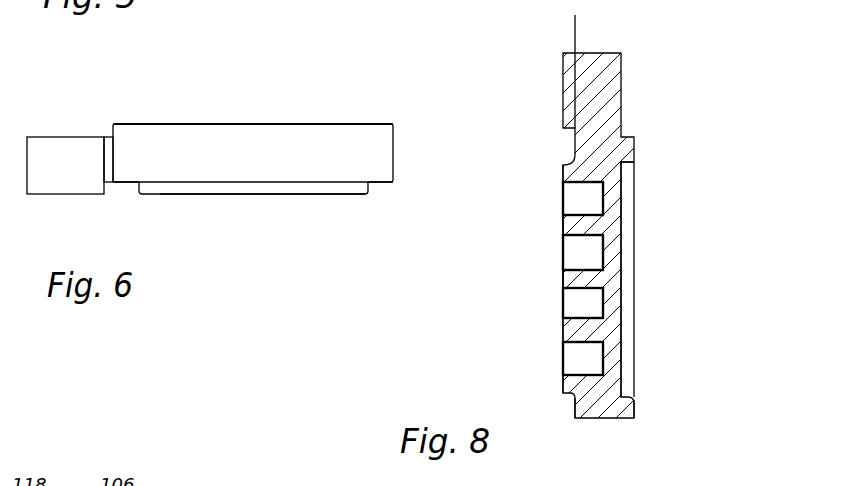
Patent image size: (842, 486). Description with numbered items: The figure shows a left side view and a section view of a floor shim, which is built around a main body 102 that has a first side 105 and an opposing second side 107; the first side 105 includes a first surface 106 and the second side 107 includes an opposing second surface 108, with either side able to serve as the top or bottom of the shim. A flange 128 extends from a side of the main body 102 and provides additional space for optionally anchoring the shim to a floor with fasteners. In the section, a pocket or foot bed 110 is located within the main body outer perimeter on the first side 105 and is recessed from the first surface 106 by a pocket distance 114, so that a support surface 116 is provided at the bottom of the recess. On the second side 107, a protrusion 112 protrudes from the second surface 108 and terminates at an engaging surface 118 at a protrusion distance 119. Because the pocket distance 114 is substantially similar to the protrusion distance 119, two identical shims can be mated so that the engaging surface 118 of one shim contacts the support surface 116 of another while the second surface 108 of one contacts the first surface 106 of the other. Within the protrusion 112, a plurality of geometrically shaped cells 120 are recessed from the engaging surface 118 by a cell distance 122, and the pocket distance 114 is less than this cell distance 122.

In FIG. 6, the main body 102 is at (393, 115).
In FIG. 8, the main body 102 is at (657, 137).
In FIG. 6, the first side 105 is at (337, 101).
In FIG. 8, the first side 105 is at (650, 189).
In FIG. 6, the first surface 106 is at (271, 121).
In FIG. 8, the first surface 106 is at (634, 402).
In FIG. 6, the second side 107 is at (241, 205).
In FIG. 8, the second side 107 is at (541, 212).
In FIG. 6, the second surface 108 is at (125, 183).
In FIG. 8, the second surface 108 is at (575, 405).
In FIG. 8, the pocket or foot bed 110 is at (636, 266).
In FIG. 6, the protrusion 112 is at (331, 198).
In FIG. 8, the protrusion 112 is at (560, 281).
In FIG. 8, the pocket distance 114 is at (634, 137).
In FIG. 8, the support surface 116 is at (621, 247).
In FIG. 6, the engaging surface 118 is at (172, 195).
In FIG. 8, the engaging surface 118 is at (563, 222).
In FIG. 8, the protrusion distance 119 is at (607, 31).
In FIG. 8, the geometrically shaped cells 120 is at (583, 245).
In FIG. 8, the cell distance 122 is at (531, 449).
In FIG. 6, the flange 128 is at (113, 120).
In FIG. 8, the flange 128 is at (634, 53).